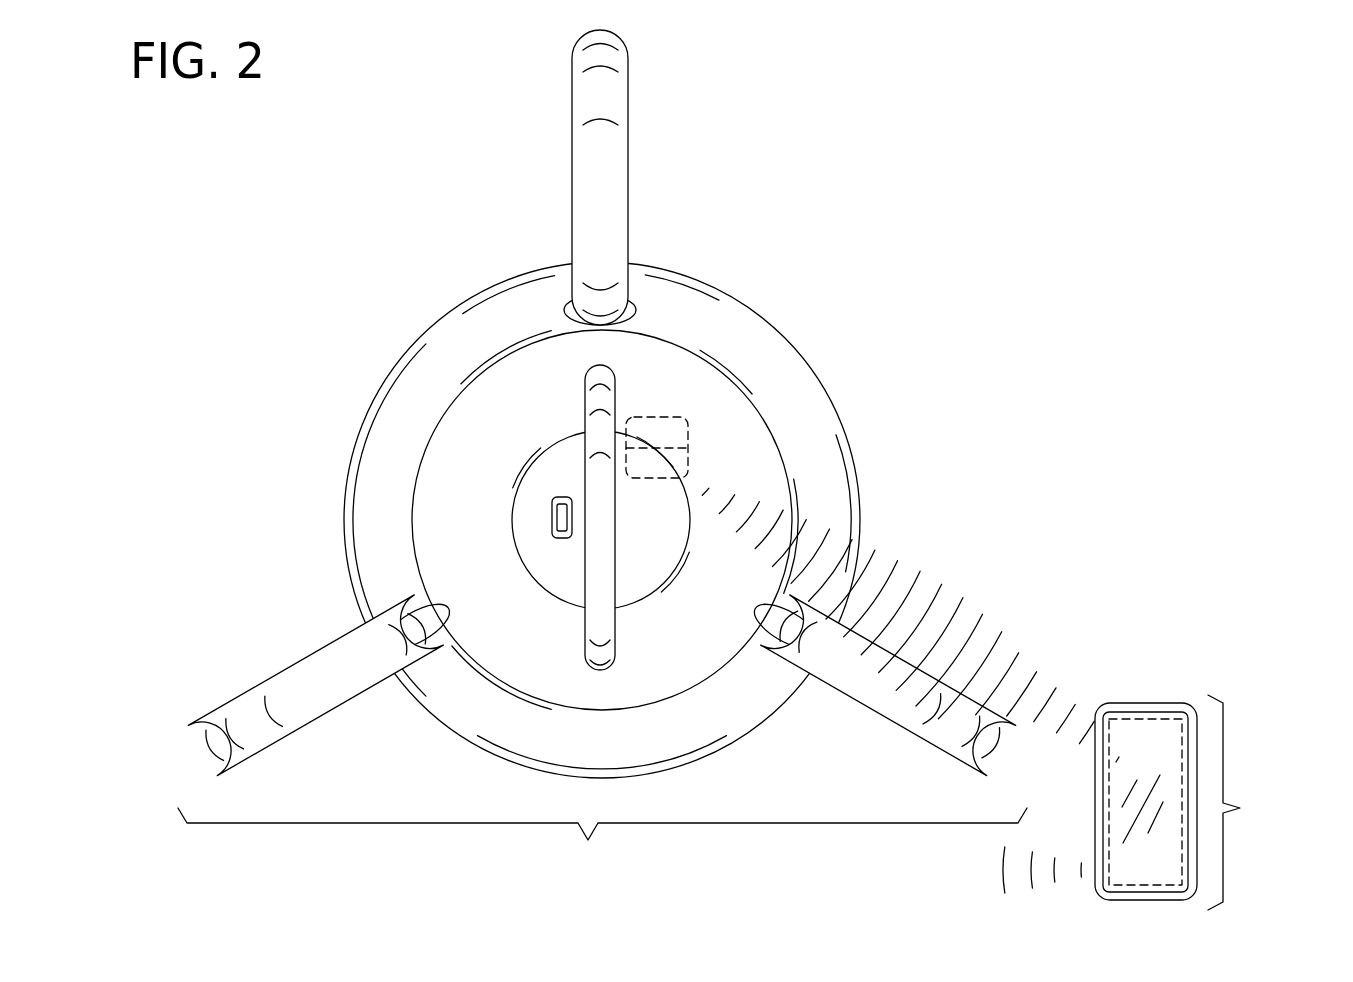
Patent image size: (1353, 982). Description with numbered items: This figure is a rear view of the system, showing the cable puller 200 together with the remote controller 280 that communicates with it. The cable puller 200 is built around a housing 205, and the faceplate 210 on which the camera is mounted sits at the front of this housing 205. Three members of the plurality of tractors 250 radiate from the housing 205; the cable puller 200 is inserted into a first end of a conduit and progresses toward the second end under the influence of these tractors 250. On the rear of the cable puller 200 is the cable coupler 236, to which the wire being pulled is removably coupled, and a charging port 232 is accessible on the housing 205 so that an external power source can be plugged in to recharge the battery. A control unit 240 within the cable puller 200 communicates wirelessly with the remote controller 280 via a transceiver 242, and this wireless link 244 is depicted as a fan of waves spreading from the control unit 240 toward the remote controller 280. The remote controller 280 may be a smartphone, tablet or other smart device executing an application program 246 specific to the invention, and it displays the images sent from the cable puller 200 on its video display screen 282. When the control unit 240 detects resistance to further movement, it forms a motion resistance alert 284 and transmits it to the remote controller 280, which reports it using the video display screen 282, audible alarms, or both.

The cable puller 200 is at (597, 459).
The housing 205 is at (448, 310).
The faceplate 210 is at (1133, 863).
The charging port 232 is at (560, 523).
The cable coupler 236 is at (615, 398).
The control unit 240 is at (678, 427).
The transceiver 242 is at (677, 457).
The wireless link 244 is at (940, 592).
The application program 246 is at (1143, 718).
The plurality of tractors 250 is at (582, 151).
The remote controller 280 is at (1164, 754).
The video display screen 282 is at (1169, 740).
The motion resistance alert 284 is at (1002, 868).